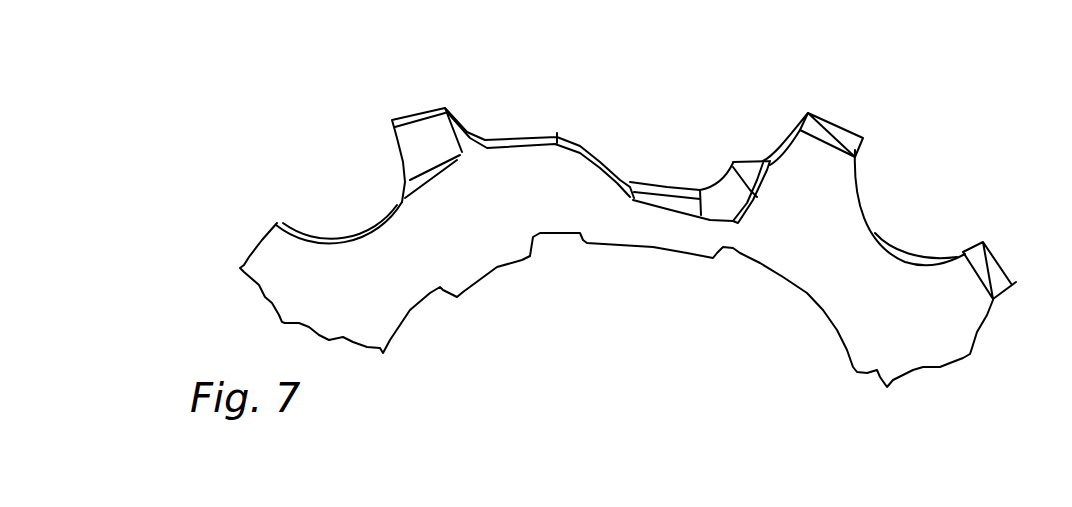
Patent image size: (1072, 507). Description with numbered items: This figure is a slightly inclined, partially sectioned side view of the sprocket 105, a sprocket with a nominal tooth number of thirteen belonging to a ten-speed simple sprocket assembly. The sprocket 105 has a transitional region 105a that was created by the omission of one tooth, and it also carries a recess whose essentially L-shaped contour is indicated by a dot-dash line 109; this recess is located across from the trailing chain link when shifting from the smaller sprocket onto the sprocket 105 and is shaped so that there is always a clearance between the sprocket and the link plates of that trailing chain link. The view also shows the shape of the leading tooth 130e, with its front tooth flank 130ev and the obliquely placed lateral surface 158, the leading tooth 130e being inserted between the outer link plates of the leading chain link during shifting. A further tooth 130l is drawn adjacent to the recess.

The leading tooth 130e is at (422, 110).
The front tooth flank 130ev is at (490, 138).
The transitional region 105a is at (700, 190).
The dot-dash line 109 is at (731, 160).
The tooth 130l is at (845, 122).
The sprocket 105 is at (860, 190).
The obliquely placed lateral surface 158 is at (425, 148).